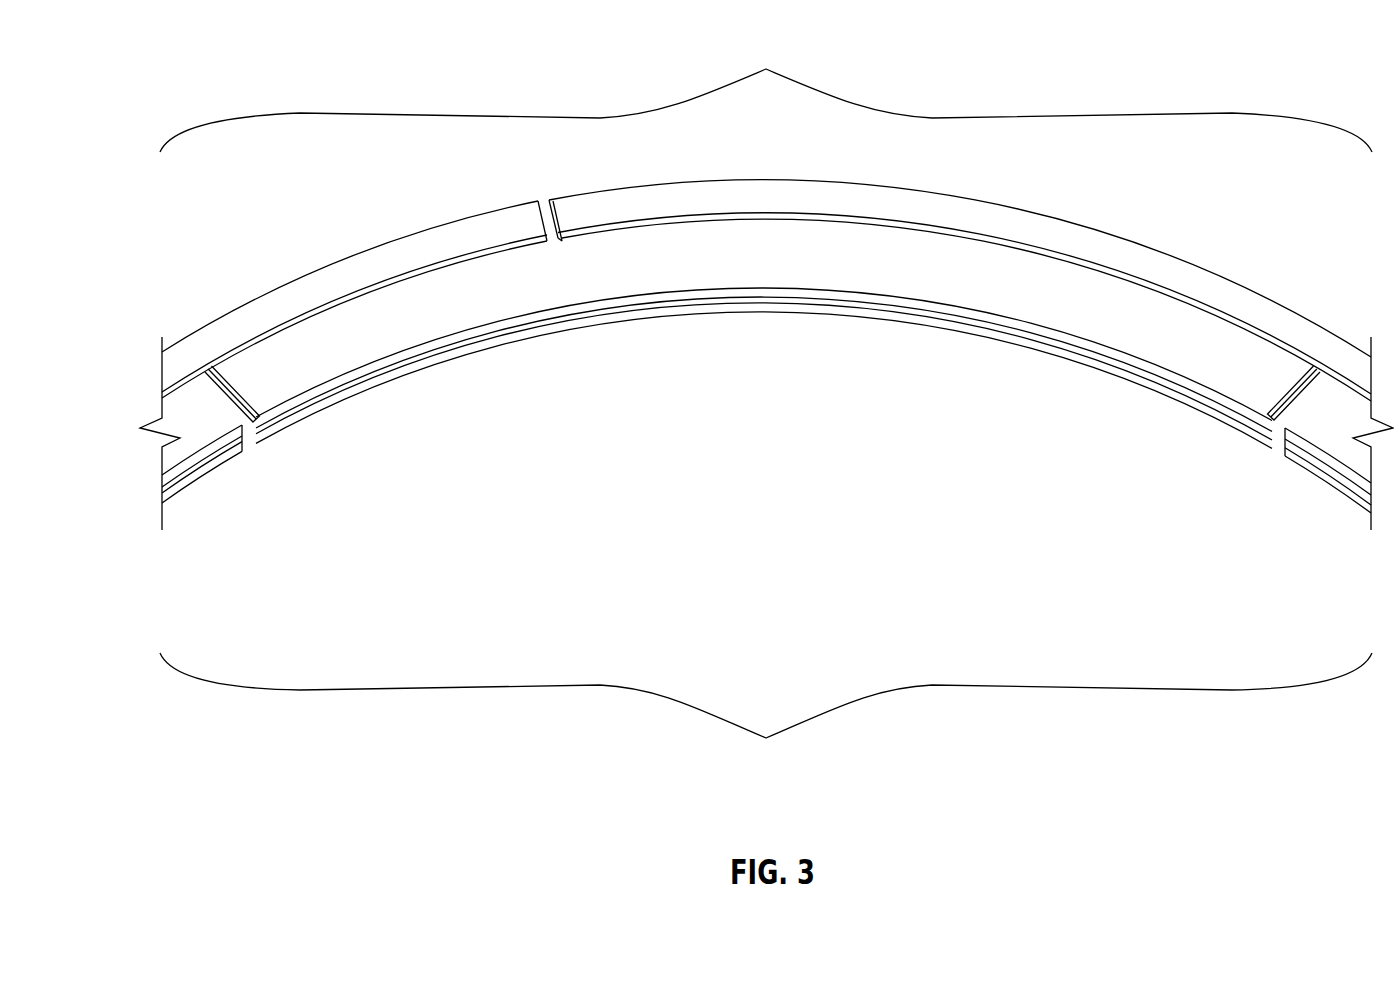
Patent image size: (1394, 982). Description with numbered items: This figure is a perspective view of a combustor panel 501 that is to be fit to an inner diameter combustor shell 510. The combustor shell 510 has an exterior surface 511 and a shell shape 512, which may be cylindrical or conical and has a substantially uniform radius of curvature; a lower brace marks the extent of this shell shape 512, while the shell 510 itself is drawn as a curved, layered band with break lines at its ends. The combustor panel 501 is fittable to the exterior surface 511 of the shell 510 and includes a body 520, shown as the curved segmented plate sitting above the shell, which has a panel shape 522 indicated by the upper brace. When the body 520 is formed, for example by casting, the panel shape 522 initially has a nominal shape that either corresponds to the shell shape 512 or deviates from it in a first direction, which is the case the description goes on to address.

The combustor panel 501 is at (188, 295).
The inner diameter combustor shell 510 is at (170, 493).
The exterior surface 511 is at (197, 470).
The shell shape 512 is at (766, 714).
The body 520 is at (460, 277).
The panel shape 522 is at (766, 91).